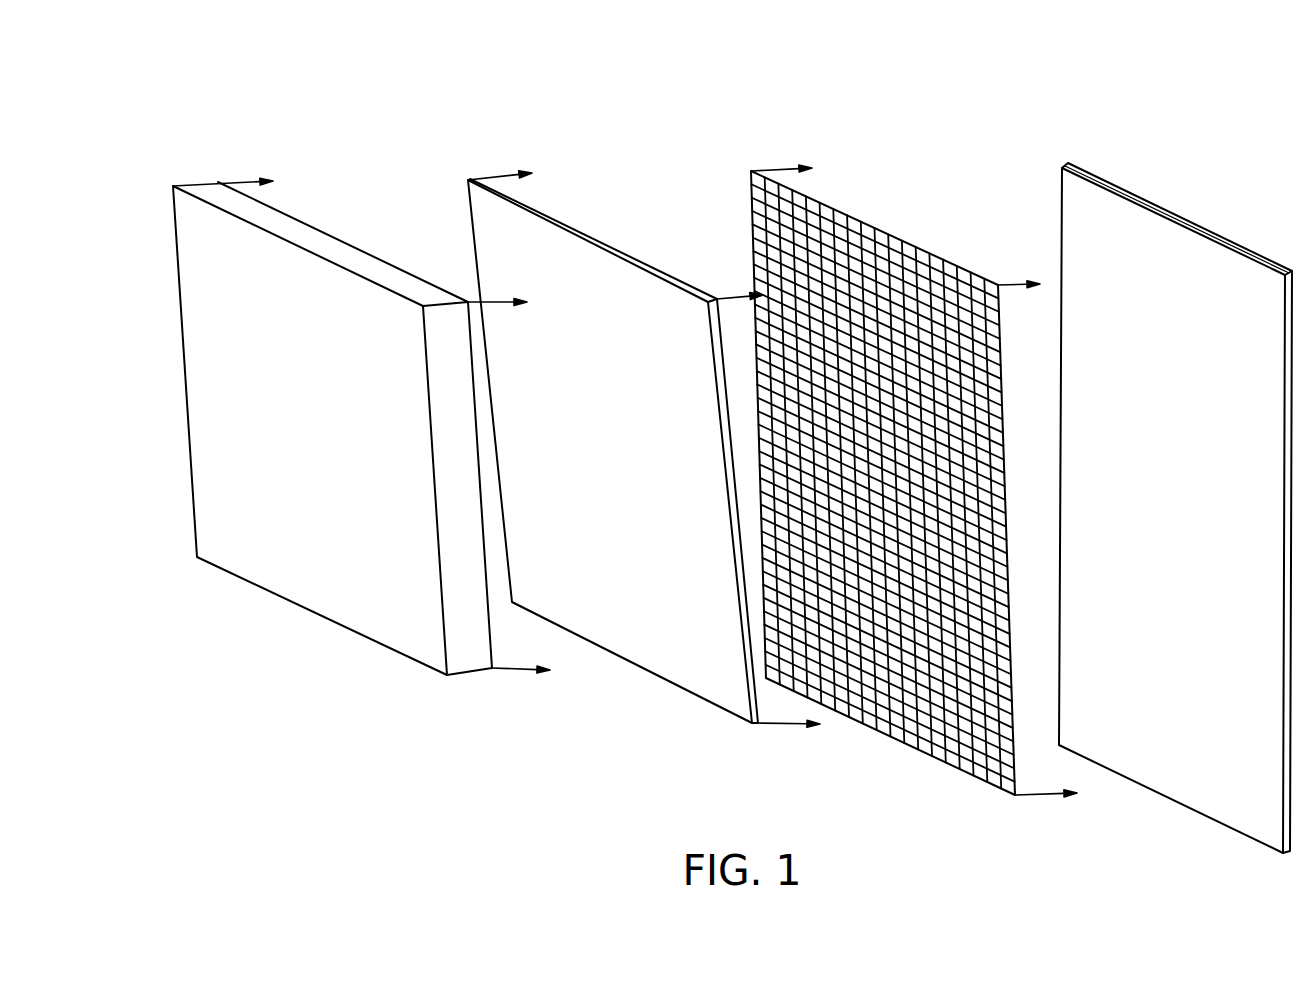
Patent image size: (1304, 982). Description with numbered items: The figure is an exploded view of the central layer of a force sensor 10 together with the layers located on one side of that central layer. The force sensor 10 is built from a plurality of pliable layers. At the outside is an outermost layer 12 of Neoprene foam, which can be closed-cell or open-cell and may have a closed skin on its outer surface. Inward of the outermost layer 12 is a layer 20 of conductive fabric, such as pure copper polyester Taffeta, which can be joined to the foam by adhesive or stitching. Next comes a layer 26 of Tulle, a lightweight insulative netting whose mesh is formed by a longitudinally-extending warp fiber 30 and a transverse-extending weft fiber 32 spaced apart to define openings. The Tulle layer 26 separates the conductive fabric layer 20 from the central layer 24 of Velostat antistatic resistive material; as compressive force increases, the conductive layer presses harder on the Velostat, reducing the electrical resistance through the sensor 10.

The force sensor 10 is at (266, 109).
The outermost layer 12 is at (348, 605).
The conductive fabric layer 20 is at (713, 680).
The central layer 24 is at (1233, 795).
The Tulle layer 26 is at (912, 738).
The warp fiber 30 is at (850, 257).
The weft fiber 32 is at (920, 295).